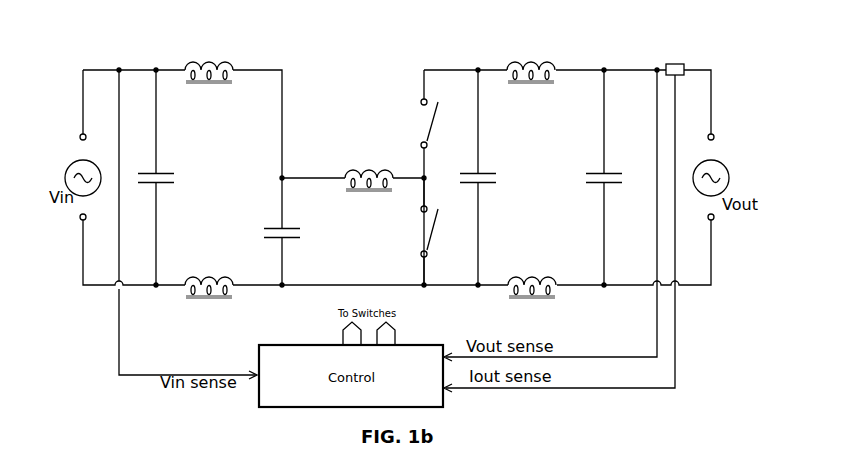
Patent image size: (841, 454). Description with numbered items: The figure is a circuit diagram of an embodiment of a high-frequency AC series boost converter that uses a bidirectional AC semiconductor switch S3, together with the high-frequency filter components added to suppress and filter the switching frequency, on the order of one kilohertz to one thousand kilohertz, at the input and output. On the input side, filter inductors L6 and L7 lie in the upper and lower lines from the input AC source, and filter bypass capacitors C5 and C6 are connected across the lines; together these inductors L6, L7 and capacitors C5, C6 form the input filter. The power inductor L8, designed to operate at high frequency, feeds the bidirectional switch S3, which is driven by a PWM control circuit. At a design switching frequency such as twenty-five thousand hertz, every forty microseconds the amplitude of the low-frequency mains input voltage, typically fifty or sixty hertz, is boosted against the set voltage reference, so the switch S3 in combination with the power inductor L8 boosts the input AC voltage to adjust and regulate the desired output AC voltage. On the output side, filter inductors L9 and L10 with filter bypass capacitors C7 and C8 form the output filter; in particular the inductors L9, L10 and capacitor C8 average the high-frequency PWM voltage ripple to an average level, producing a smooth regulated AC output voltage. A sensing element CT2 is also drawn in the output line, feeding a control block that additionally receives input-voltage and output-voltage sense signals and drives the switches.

The filter inductor L6 is at (209, 63).
The filter inductor L7 is at (209, 278).
The power inductor L8 is at (369, 171).
The filter inductor L9 is at (531, 63).
The filter inductor L10 is at (532, 278).
The filter bypass capacitor C5 is at (168, 177).
The filter bypass capacitor C6 is at (269, 232).
The filter bypass capacitor C7 is at (490, 177).
The filter bypass capacitor C8 is at (616, 177).
The bidirectional AC semiconductor switch S3 is at (417, 177).
The current transformer CT2 is at (566, 217).